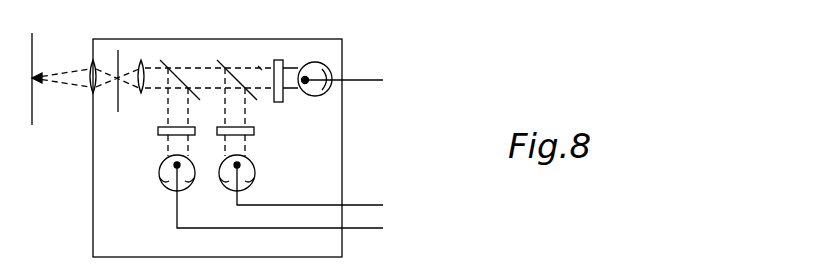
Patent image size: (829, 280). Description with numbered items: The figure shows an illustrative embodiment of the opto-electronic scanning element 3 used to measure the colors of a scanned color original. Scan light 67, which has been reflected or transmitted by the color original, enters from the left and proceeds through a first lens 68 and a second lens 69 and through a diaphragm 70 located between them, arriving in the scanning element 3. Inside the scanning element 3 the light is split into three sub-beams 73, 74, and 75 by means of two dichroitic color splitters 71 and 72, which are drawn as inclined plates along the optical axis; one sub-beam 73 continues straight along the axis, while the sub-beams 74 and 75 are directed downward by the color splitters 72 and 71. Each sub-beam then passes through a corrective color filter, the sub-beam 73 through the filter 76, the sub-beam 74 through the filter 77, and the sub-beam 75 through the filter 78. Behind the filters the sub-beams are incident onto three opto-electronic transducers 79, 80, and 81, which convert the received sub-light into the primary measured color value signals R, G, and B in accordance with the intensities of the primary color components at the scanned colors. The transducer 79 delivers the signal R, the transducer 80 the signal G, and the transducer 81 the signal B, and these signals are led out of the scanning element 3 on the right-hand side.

The opto-electronic scanning element 3 is at (103, 194).
The scan light 67 is at (63, 72).
The lens 68 is at (94, 58).
The lens 69 is at (143, 59).
The diaphragm 70 is at (120, 57).
The dichroitic color splitter 71 is at (167, 61).
The dichroitic color splitter 72 is at (221, 60).
The sub-beam 73 is at (258, 66).
The sub-beam 74 is at (243, 110).
The sub-beam 75 is at (185, 114).
The corrective color filter 76 is at (287, 60).
The corrective color filter 77 is at (255, 132).
The corrective color filter 78 is at (158, 132).
The opto-electronic transducer 79 is at (321, 63).
The opto-electronic transducer 80 is at (256, 170).
The opto-electronic transducer 81 is at (161, 177).